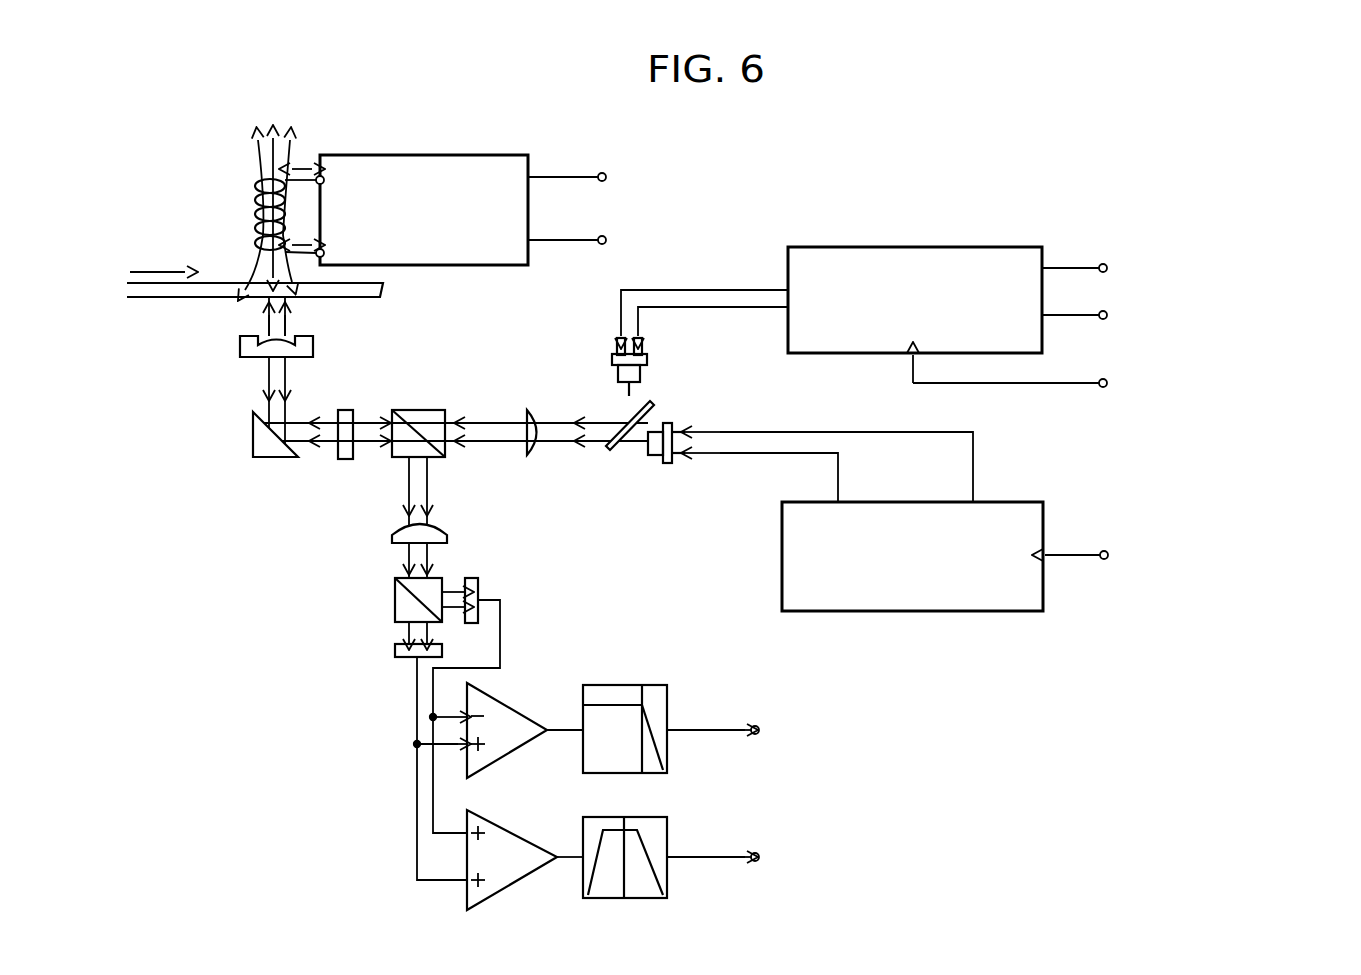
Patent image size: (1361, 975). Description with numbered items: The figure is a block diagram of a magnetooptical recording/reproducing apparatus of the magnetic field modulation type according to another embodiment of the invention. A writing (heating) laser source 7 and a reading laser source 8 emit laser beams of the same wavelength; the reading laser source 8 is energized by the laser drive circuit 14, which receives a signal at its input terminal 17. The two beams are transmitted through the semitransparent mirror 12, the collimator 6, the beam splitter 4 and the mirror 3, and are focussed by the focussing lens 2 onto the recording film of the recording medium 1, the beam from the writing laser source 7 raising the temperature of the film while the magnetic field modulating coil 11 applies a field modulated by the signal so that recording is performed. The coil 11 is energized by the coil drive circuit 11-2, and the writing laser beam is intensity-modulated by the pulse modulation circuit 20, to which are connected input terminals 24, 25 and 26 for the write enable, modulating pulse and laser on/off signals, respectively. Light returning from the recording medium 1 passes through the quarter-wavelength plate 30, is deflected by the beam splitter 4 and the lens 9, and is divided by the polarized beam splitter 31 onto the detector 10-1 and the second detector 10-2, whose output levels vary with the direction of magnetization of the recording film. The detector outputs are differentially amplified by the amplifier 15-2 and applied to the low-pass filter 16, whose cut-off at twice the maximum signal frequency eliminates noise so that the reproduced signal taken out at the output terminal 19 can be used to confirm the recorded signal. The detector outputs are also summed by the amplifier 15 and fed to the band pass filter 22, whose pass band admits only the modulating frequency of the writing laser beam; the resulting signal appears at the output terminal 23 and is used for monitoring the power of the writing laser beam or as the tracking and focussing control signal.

The recording medium 1 is at (373, 288).
The focussing lens 2 is at (313, 346).
The mirror 3 is at (253, 440).
The beam splitter 4 is at (418, 410).
The collimator 6 is at (532, 410).
The writing laser source 7 is at (641, 372).
The reading laser source 8 is at (667, 423).
The lens 9 is at (445, 533).
The detector 10-1 is at (478, 586).
The second detector 10-2 is at (395, 650).
The magnetic field modulating coil 11 is at (255, 190).
The coil drive circuit 11-2 is at (422, 155).
The semitransparent mirror 12 is at (612, 448).
The laser drive circuit 14 is at (995, 502).
The amplifier 15 is at (522, 715).
The amplifier 15-2 is at (509, 885).
The low-pass filter 16 is at (667, 712).
The input terminal 17 is at (1106, 551).
The output terminal 19 is at (757, 725).
The pulse modulation circuit 20 is at (930, 247).
The band pass filter 22 is at (667, 845).
The output terminal 23 is at (757, 852).
The write enable signal input terminal 24 is at (1106, 265).
The modulating pulse signal input terminal 25 is at (1107, 315).
The laser on/off signal input terminal 26 is at (1106, 386).
The quarter-wavelength plate 30 is at (345, 459).
The polarized beam splitter 31 is at (395, 605).